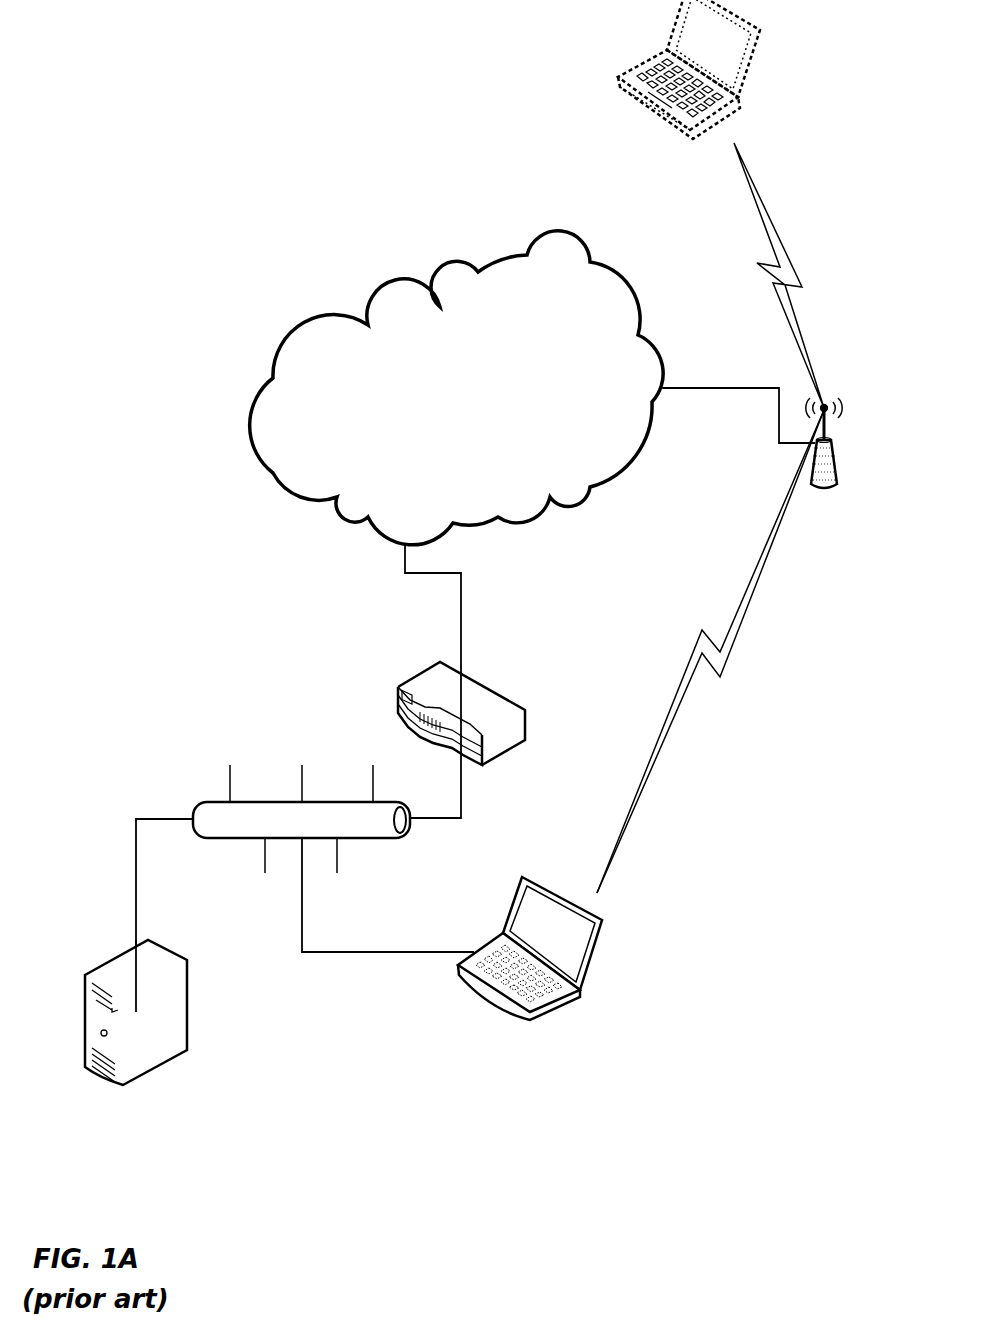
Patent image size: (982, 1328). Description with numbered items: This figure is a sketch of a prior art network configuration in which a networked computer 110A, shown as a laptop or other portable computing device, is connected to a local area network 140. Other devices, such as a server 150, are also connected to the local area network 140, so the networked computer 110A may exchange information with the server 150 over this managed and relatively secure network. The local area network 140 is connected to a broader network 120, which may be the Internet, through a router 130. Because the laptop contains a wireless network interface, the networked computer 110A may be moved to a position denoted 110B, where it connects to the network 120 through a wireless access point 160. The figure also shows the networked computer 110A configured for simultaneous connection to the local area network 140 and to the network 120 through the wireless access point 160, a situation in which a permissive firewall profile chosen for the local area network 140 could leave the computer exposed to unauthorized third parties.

The networked computer 110A is at (595, 957).
The networked computer position 110B is at (762, 45).
The network 120 is at (407, 282).
The router 130 is at (463, 676).
The local area network 140 is at (203, 800).
The server 150 is at (157, 1068).
The wireless access point 160 is at (840, 478).